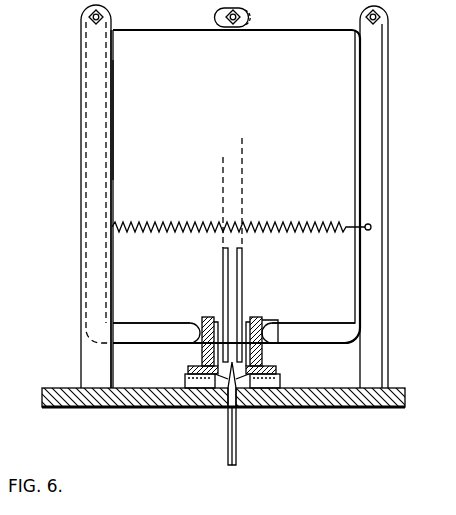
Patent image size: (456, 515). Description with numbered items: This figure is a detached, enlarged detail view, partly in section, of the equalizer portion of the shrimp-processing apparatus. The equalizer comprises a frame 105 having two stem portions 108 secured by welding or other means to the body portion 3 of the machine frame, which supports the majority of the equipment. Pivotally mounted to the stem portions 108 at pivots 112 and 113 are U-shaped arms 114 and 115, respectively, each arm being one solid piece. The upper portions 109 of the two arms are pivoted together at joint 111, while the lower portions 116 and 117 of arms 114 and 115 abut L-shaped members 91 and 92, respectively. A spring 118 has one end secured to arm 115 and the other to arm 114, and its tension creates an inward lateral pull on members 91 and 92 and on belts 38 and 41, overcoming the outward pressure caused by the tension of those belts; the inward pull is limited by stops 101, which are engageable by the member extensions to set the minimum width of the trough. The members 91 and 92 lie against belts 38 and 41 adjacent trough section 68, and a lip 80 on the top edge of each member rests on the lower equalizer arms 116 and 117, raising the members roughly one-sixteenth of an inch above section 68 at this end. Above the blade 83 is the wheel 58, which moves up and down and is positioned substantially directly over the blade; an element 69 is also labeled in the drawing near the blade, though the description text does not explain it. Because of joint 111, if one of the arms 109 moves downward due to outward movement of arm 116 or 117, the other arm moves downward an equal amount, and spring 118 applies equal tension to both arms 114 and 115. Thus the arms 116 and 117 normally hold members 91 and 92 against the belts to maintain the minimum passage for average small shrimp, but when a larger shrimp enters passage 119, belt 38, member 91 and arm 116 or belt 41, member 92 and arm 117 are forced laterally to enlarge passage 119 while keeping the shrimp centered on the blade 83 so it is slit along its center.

The body portion 3 is at (363, 402).
The belt 38 is at (251, 321).
The belt 41 is at (218, 318).
The wheel 58 is at (224, 262).
The trough section 68 is at (250, 395).
The needle passage 69 is at (228, 380).
The lip 80 is at (272, 322).
The blade 83 is at (228, 457).
The L-shaped member 91 is at (270, 366).
The L-shaped member 92 is at (196, 366).
The stop 101 is at (186, 382).
The equalizer frame 105 is at (122, 121).
The stem portion 108 is at (90, 351).
The arm portion 109 is at (172, 21).
The joint 111 is at (240, 21).
The pivot 112 is at (378, 24).
The pivot 113 is at (91, 17).
The U-shaped arm 114 is at (375, 178).
The U-shaped arm 115 is at (93, 172).
The arm portion 116 is at (335, 336).
The arm portion 117 is at (129, 322).
The spring 118 is at (296, 220).
The passage 119 is at (247, 410).